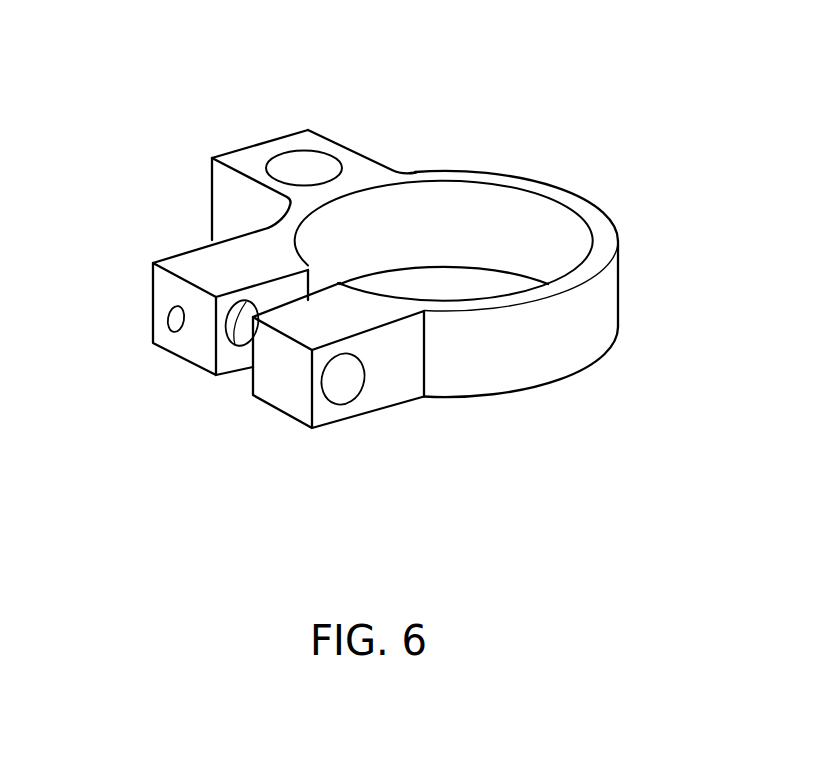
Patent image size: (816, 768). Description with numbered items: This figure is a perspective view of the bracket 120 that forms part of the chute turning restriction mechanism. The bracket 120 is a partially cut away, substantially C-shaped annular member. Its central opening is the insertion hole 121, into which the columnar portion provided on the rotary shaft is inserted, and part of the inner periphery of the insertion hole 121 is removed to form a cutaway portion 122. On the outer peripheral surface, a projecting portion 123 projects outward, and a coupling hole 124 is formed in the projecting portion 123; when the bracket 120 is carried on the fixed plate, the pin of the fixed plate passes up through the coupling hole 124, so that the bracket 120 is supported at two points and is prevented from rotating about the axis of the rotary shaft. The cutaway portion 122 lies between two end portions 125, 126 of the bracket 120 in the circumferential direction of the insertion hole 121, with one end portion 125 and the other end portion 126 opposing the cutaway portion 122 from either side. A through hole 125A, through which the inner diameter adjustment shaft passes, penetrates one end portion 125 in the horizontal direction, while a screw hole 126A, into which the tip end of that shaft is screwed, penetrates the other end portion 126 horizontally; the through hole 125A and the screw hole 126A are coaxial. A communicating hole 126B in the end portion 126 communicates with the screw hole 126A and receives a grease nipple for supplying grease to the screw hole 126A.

The bracket 120 is at (538, 152).
The insertion hole 121 is at (536, 214).
The cutaway portion 122 is at (248, 373).
The projecting portion 123 is at (252, 160).
The coupling hole 124 is at (288, 163).
The one end portion 125 is at (283, 400).
The through hole 125A is at (350, 390).
The other end portion 126 is at (187, 352).
The screw hole 126A is at (248, 350).
The communicating hole 126B is at (167, 315).